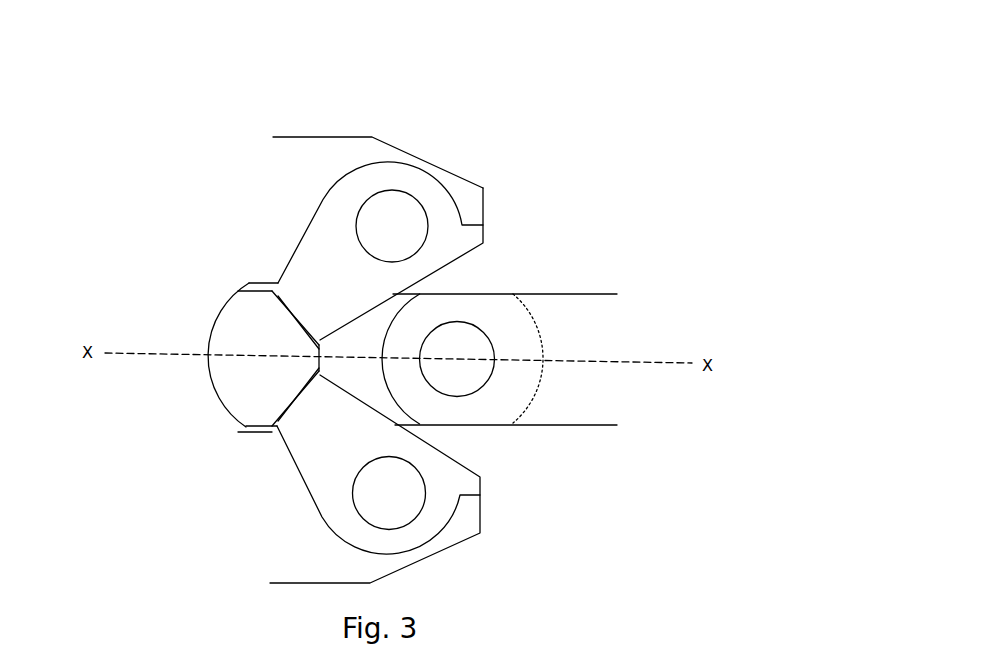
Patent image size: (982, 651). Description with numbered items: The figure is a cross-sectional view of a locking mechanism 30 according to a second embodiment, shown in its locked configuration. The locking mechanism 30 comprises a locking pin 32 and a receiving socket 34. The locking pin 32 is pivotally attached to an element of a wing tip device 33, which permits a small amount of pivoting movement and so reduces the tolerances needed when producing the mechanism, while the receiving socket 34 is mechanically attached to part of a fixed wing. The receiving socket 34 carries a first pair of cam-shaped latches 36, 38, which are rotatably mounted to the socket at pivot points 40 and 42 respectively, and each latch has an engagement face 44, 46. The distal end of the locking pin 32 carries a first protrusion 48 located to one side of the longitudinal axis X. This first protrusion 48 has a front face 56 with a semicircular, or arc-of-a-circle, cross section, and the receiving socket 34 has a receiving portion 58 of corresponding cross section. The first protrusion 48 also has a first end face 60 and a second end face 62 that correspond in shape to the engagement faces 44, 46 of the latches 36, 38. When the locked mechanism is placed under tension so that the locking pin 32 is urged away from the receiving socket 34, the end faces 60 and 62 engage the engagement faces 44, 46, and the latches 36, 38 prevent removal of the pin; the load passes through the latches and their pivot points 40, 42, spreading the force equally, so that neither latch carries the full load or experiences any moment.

The locking mechanism 30 is at (542, 113).
The locking pin 32 is at (502, 310).
The wing tip device 33 is at (467, 340).
The receiving socket 34 is at (287, 182).
The latch 36 is at (423, 218).
The latch 38 is at (427, 485).
The pivot point 40 is at (407, 222).
The pivot point 42 is at (403, 488).
The engagement face 44 is at (288, 313).
The engagement face 46 is at (290, 402).
The first protrusion 48 is at (233, 360).
The front face 56 is at (210, 342).
The receiving portion 58 is at (228, 303).
The first end face 60 is at (279, 313).
The second end face 62 is at (283, 398).